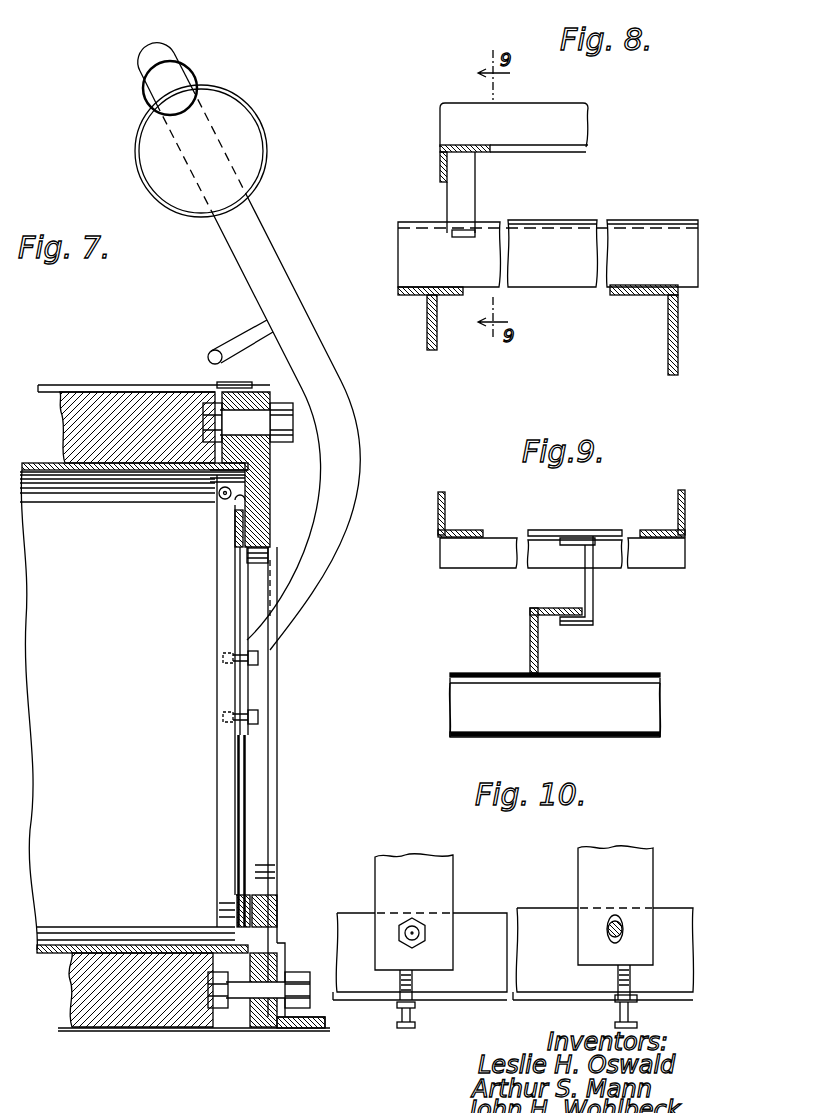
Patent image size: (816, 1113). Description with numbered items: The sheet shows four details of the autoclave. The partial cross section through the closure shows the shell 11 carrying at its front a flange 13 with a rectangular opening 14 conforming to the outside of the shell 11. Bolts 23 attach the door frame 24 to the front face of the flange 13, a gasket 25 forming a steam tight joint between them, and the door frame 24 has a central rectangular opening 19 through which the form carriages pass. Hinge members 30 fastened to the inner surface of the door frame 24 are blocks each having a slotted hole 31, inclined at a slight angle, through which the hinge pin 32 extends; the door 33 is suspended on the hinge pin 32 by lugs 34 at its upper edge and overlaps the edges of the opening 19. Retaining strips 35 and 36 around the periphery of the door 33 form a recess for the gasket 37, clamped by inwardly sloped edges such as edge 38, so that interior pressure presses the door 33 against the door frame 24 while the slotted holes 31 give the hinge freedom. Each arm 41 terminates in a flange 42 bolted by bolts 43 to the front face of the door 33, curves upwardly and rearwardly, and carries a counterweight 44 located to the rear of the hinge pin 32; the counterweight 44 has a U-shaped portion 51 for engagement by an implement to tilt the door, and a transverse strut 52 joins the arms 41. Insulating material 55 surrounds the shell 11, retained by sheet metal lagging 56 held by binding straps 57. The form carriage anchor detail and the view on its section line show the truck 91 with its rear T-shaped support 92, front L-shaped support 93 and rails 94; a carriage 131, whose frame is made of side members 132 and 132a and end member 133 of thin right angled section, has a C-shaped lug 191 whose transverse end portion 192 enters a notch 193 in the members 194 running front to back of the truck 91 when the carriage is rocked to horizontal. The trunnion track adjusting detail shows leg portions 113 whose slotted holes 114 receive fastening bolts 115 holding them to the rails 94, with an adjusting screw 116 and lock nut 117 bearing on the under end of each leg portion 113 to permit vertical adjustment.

In FIG. 7, the shell 11 is at (107, 472).
In FIG. 7, the flange 13 is at (205, 385).
In FIG. 7, the rectangular opening 14 is at (222, 471).
In FIG. 7, the rectangular opening 19 is at (272, 790).
In FIG. 7, the bolts 23 is at (293, 432).
In FIG. 7, the door frame 24 is at (262, 505).
In FIG. 7, the gasket 25 is at (262, 386).
In FIG. 7, the hinge members 30 is at (265, 487).
In FIG. 7, the slotted hole 31 is at (268, 520).
In FIG. 7, the hinge pin 32 is at (237, 505).
In FIG. 7, the door 33 is at (218, 600).
In FIG. 7, the lugs 34 is at (222, 498).
In FIG. 7, the retaining strip 35 is at (278, 897).
In FIG. 7, the retaining strip 36 is at (250, 925).
In FIG. 7, the gasket 37 is at (235, 910).
In FIG. 7, the inwardly sloped edge 38 is at (238, 897).
In FIG. 7, the arms 41 is at (262, 240).
In FIG. 7, the flange 42 is at (250, 690).
In FIG. 7, the bolts 43 is at (260, 658).
In FIG. 7, the counterweight 44 is at (245, 125).
In FIG. 7, the U-shaped portion 51 is at (145, 93).
In FIG. 7, the transverse strut 52 is at (214, 350).
In FIG. 7, the insulating material 55 is at (92, 387).
In FIG. 7, the sheet metal lagging 56 is at (92, 1032).
In FIG. 7, the binding straps 57 is at (240, 1032).
In FIG. 8, the truck 91 is at (583, 300).
In FIG. 9, the truck 91 is at (641, 670).
In FIG. 8, the rear transverse T-shaped support 92 is at (437, 345).
In FIG. 9, the rear transverse T-shaped support 92 is at (663, 710).
In FIG. 8, the front L-shaped transverse support 93 is at (668, 345).
In FIG. 10, the rails 94 is at (540, 912).
In FIG. 10, the leg portions 113 is at (445, 878).
In FIG. 10, the slotted hole 114 is at (422, 928).
In FIG. 10, the fastening bolts 115 is at (605, 930).
In FIG. 10, the adjusting screw 116 is at (416, 1018).
In FIG. 10, the lock nut 117 is at (398, 1007).
In FIG. 8, the form carriages 131 is at (430, 142).
In FIG. 9, the form carriages 131 is at (582, 523).
In FIG. 8, the side member 132 is at (582, 110).
In FIG. 9, the side member 132 is at (677, 504).
In FIG. 9, the side member 132a is at (447, 505).
In FIG. 8, the end member 133 is at (440, 170).
In FIG. 9, the end member 133 is at (470, 562).
In FIG. 8, the C-shaped lug 191 is at (476, 181).
In FIG. 9, the C-shaped lug 191 is at (594, 600).
In FIG. 8, the end portion 192 is at (462, 240).
In FIG. 9, the end portion 192 is at (566, 627).
In FIG. 8, the notch 193 is at (548, 224).
In FIG. 8, the members 194 is at (633, 222).
In FIG. 9, the members 194 is at (530, 643).